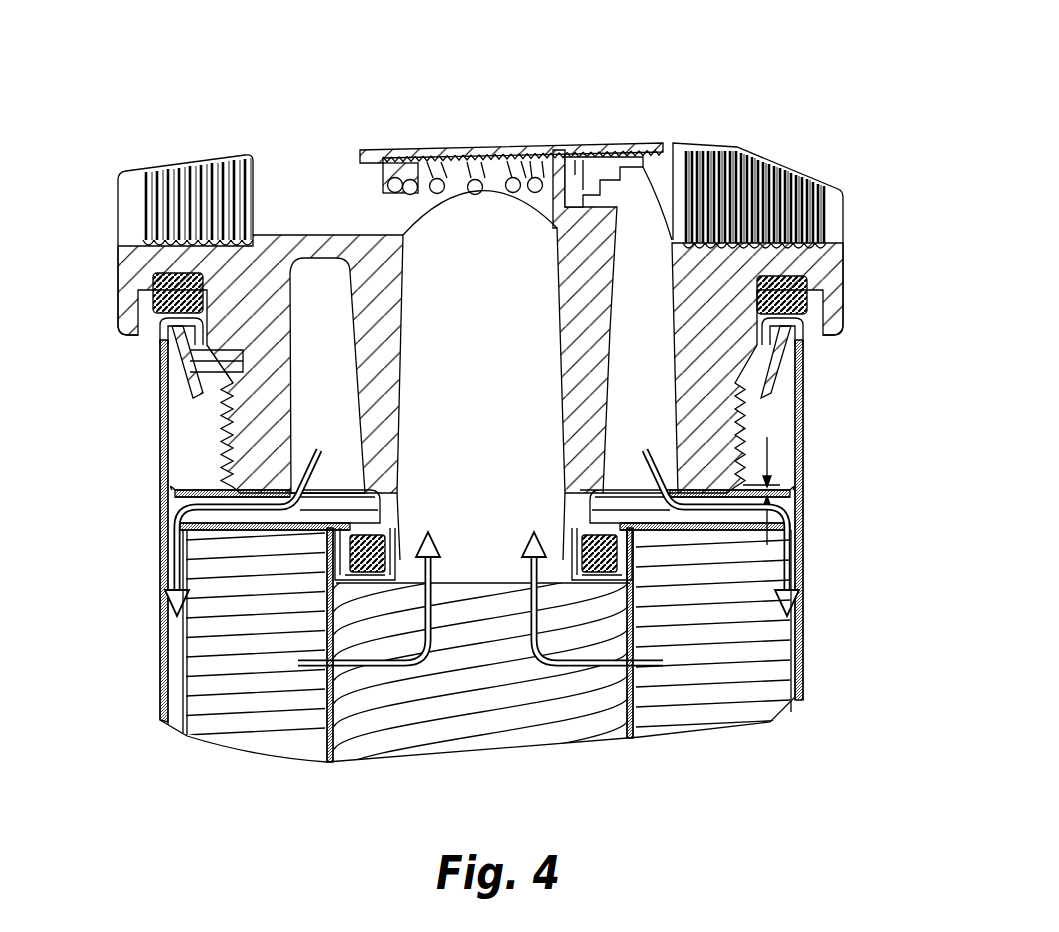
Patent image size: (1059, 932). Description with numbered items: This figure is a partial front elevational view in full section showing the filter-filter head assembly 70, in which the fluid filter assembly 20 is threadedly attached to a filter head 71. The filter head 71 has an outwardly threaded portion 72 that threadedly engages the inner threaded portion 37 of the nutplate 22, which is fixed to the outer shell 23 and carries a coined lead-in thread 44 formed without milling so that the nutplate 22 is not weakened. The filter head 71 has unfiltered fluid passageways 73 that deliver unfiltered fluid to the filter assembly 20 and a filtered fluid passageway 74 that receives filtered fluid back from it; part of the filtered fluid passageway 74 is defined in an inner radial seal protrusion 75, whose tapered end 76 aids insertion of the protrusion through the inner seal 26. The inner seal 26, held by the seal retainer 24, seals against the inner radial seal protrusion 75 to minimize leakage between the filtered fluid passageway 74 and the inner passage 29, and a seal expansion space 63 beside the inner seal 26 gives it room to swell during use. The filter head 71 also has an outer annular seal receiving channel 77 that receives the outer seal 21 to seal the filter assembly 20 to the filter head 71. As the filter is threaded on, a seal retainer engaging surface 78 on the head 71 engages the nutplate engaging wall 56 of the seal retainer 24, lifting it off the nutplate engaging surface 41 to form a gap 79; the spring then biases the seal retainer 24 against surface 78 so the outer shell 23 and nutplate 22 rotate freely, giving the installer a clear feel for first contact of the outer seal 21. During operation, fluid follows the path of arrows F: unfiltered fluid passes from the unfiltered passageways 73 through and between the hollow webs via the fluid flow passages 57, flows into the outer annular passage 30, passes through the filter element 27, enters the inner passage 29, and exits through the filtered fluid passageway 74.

The fluid filter assembly 20 is at (820, 422).
The outer seal 21 is at (157, 283).
The nutplate 22 is at (178, 342).
The outer shell 23 is at (160, 367).
The seal retainer 24 is at (175, 493).
The inner seal 26 is at (172, 600).
The filter element 27 is at (213, 710).
The inner passage 29 is at (490, 688).
The outer annular passage 30 is at (170, 683).
The inner threaded portion 37 is at (750, 447).
The engaging surface 41 is at (172, 492).
The coined lead-in thread 44 is at (808, 296).
The nutplate engaging wall 56 is at (228, 466).
The fluid flow passage 57 is at (162, 512).
The seal expansion space 63 is at (765, 622).
The filter-filter head assembly 70 is at (571, 120).
The filter head 71 is at (607, 150).
The outwardly threaded portion 72 is at (727, 425).
The unfiltered fluid passageways 73 is at (336, 386).
The filtered fluid passageway 74 is at (497, 386).
The inner radial seal protrusion 75 is at (352, 555).
The tapered end 76 is at (336, 582).
The outer annular seal receiving channel 77 is at (811, 332).
The seal retainer engaging surface 78 is at (283, 410).
The gap 79 is at (800, 490).